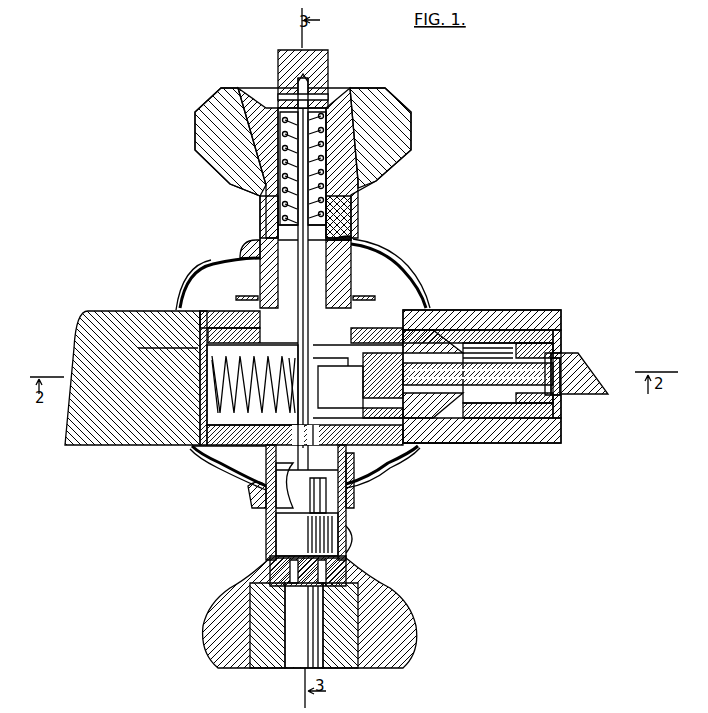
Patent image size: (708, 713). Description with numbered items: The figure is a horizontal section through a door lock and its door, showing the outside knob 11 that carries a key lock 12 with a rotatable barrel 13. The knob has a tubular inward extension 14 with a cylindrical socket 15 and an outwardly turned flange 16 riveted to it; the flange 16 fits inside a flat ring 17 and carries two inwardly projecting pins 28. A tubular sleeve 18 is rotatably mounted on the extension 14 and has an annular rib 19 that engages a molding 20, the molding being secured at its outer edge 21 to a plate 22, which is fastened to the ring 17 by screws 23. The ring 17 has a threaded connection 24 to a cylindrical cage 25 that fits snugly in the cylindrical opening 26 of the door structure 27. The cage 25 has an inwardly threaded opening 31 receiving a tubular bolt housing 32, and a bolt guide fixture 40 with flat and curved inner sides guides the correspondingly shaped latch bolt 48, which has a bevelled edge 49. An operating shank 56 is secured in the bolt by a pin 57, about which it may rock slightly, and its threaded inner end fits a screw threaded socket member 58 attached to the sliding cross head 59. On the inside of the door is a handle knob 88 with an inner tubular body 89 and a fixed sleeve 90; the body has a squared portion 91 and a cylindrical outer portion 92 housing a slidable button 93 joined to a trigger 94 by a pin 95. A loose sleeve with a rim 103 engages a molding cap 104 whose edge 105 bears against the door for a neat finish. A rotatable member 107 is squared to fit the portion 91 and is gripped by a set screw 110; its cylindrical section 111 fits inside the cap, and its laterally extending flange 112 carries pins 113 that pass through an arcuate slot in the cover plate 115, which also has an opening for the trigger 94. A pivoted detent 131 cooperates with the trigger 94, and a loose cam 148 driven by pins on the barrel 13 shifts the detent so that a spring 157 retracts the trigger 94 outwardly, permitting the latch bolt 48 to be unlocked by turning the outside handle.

The outside knob 11 is at (214, 648).
The lock 12 is at (348, 602).
The rotatable barrel 13 is at (290, 650).
The tubular inward extension 14 is at (338, 510).
The cylindrical socket 15 is at (354, 528).
The outwardly turned flange 16 is at (245, 437).
The flat ring 17 is at (316, 444).
The tubular sleeve 18 is at (362, 458).
The annular rib 19 is at (262, 478).
The molding 20 is at (246, 482).
The outer edge 21 is at (210, 425).
The plate 22 is at (220, 432).
The screws 23 is at (232, 438).
The threaded connection 24 is at (400, 436).
The cylindrical cage 25 is at (188, 403).
The cylindrical opening 26 is at (192, 325).
The door structure 27 is at (87, 412).
The pins 28 is at (465, 440).
The inwardly threaded opening 31 is at (400, 342).
The tubular bolt housing 32 is at (484, 311).
The bolt guide fixture 40 is at (530, 404).
The latch bolt 48 is at (586, 395).
The bevelled edge 49 is at (588, 370).
The operating shank 56 is at (487, 360).
The pin 57 is at (547, 349).
The screw threaded socket member 58 is at (396, 345).
The cross head 59 is at (355, 350).
The handle knob 88 is at (412, 101).
The inner tubular body 89 is at (250, 136).
The sleeve 90 is at (343, 197).
The squared portion 91 is at (325, 262).
The outer portion 92 is at (318, 112).
The slidable button 93 is at (271, 57).
The trigger 94 is at (290, 178).
The pin 95 is at (306, 92).
The rim 103 is at (244, 236).
The molding cap 104 is at (172, 300).
The edge 105 is at (200, 290).
The rotatable member 107 is at (262, 278).
The set screw 110 is at (335, 236).
The cylindrical section 111 is at (335, 285).
The laterally extending flange 112 is at (240, 330).
The pins 113 is at (358, 381).
The cover plate 115 is at (190, 342).
The detent 131 is at (340, 470).
The loose cam 148 is at (278, 535).
The spring 157 is at (318, 155).